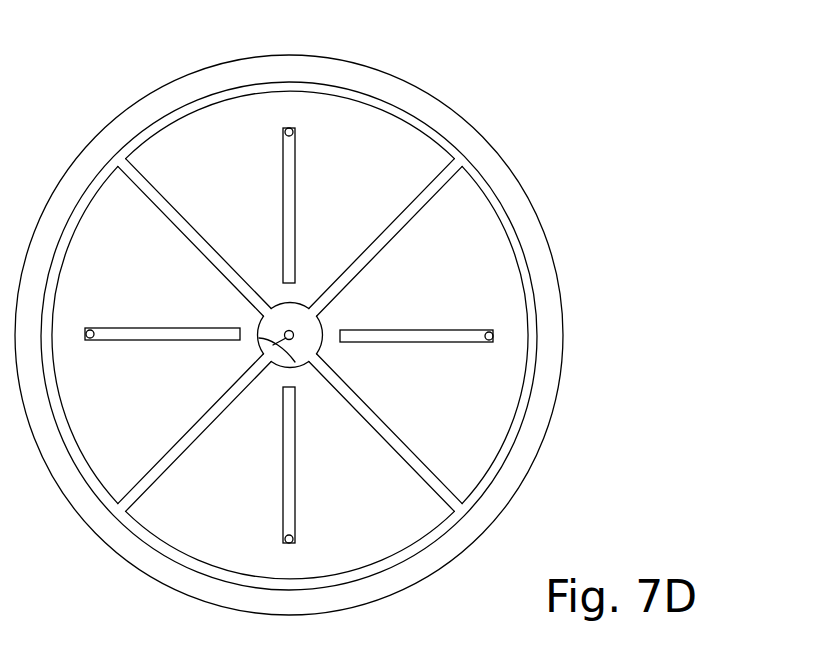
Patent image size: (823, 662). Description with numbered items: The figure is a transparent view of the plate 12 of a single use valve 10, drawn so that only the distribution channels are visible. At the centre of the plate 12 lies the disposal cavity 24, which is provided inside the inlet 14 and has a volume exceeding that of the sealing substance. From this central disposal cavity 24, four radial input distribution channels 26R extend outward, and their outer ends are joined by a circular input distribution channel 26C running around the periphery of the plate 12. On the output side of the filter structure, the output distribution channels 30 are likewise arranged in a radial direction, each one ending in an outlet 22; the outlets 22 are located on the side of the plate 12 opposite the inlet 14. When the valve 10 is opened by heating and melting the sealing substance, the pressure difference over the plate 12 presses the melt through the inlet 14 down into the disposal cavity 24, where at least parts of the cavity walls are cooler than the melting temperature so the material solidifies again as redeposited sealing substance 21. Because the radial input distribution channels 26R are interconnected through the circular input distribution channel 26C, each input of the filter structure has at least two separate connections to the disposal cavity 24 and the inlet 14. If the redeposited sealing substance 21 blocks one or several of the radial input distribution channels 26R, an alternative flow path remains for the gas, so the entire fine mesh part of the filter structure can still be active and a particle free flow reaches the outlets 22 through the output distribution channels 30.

The single use valve 10 is at (563, 200).
The plate 12 is at (369, 58).
The inlet 14 is at (261, 316).
The redeposited sealing substance 21 is at (280, 360).
The outlets 22 is at (285, 131).
The disposal cavity 24 is at (315, 342).
The circular input distribution channel 26C is at (228, 570).
The radial input distribution channels 26R is at (162, 203).
The output distribution channels 30 is at (284, 178).